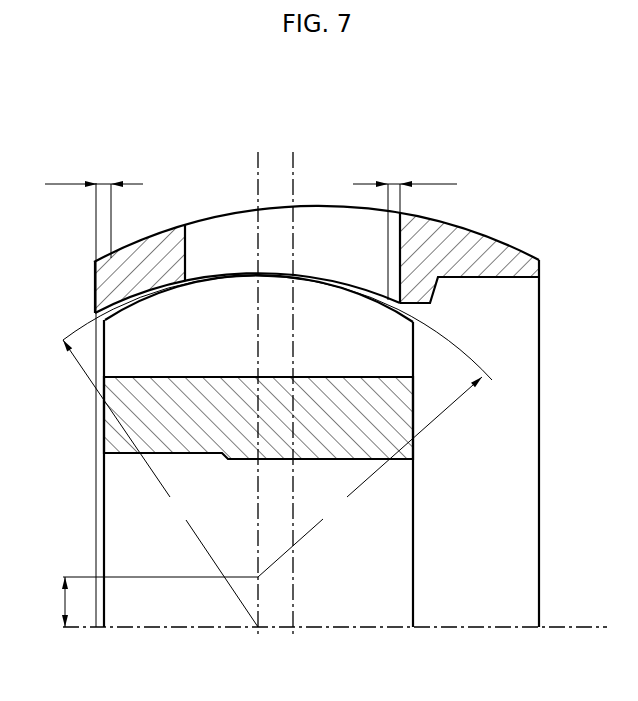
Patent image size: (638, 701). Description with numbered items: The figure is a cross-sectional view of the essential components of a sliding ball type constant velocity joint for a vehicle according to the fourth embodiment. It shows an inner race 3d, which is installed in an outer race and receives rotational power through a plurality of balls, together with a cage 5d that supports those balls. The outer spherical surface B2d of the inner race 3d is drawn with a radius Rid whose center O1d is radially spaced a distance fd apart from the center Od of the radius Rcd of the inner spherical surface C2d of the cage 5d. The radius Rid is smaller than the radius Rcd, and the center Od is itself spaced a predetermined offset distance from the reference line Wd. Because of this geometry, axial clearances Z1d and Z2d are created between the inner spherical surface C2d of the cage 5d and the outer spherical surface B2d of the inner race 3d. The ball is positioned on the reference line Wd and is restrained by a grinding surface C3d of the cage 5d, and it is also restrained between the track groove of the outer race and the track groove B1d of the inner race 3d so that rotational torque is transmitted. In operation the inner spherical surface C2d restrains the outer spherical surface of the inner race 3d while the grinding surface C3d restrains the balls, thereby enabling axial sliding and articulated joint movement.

The axial clearance Z1d is at (94, 211).
The axial clearance Z2d is at (405, 232).
The reference line Wd is at (293, 178).
The inner spherical surface C2d is at (143, 287).
The grinding surface C3d is at (185, 248).
The cage 5d is at (490, 250).
The outer spherical surface B2d is at (148, 297).
The track groove B1d is at (243, 377).
The inner race 3d is at (110, 432).
The radius Rcd is at (160, 483).
The radius Rid is at (370, 477).
The distance fd is at (148, 602).
The center Od is at (258, 627).
The center O1d is at (258, 577).